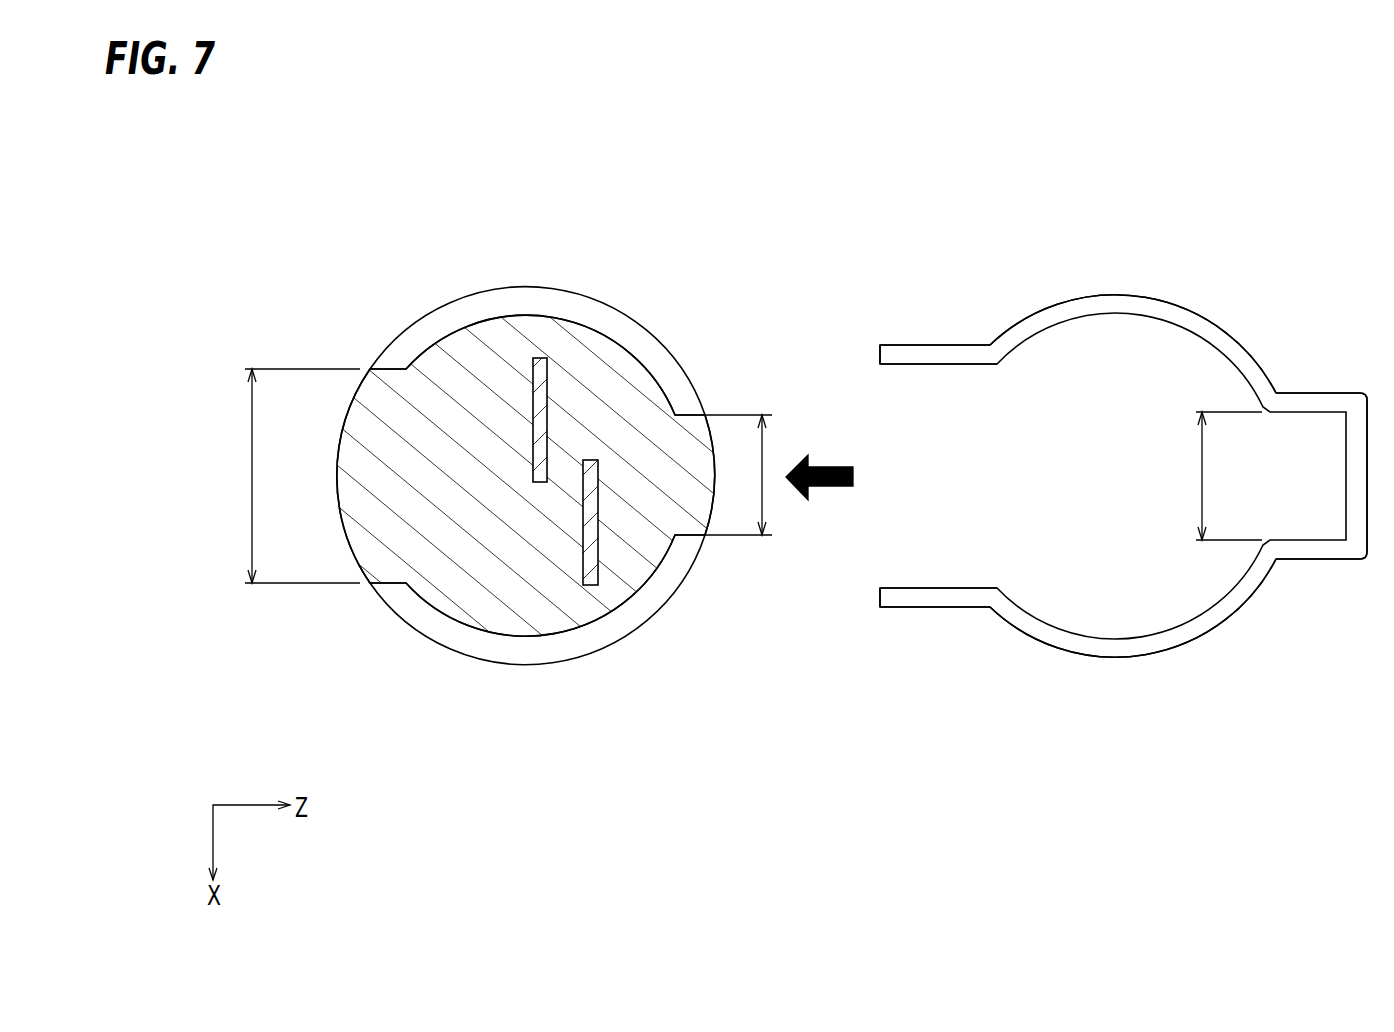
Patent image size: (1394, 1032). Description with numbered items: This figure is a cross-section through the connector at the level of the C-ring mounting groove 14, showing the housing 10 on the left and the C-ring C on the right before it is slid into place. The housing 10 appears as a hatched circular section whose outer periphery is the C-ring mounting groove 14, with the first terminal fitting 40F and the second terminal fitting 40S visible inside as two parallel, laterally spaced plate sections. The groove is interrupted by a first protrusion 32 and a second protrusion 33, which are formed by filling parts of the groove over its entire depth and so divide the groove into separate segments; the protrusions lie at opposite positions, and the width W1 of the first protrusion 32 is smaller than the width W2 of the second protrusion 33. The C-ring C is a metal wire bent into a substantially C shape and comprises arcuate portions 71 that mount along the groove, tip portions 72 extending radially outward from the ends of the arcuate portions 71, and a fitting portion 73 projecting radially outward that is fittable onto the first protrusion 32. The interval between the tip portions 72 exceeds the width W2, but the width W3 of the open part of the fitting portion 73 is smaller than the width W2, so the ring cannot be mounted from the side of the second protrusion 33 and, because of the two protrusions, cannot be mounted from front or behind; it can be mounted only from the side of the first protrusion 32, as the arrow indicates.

The housing 10 is at (463, 347).
The C-ring mounting groove 14 is at (535, 302).
The first protrusion 32 is at (697, 470).
The second protrusion 33 is at (362, 466).
The first terminal fitting 40F is at (543, 406).
The second terminal fitting 40S is at (587, 553).
The arcuate portions 71 is at (1116, 303).
The tip portions 72 is at (936, 352).
The fitting portion 73 is at (1316, 398).
The C-ring C is at (1196, 318).
The width of the first protrusion W1 is at (763, 493).
The width of the second protrusion W2 is at (250, 468).
The width of the open part of the fitting portion W3 is at (1202, 472).